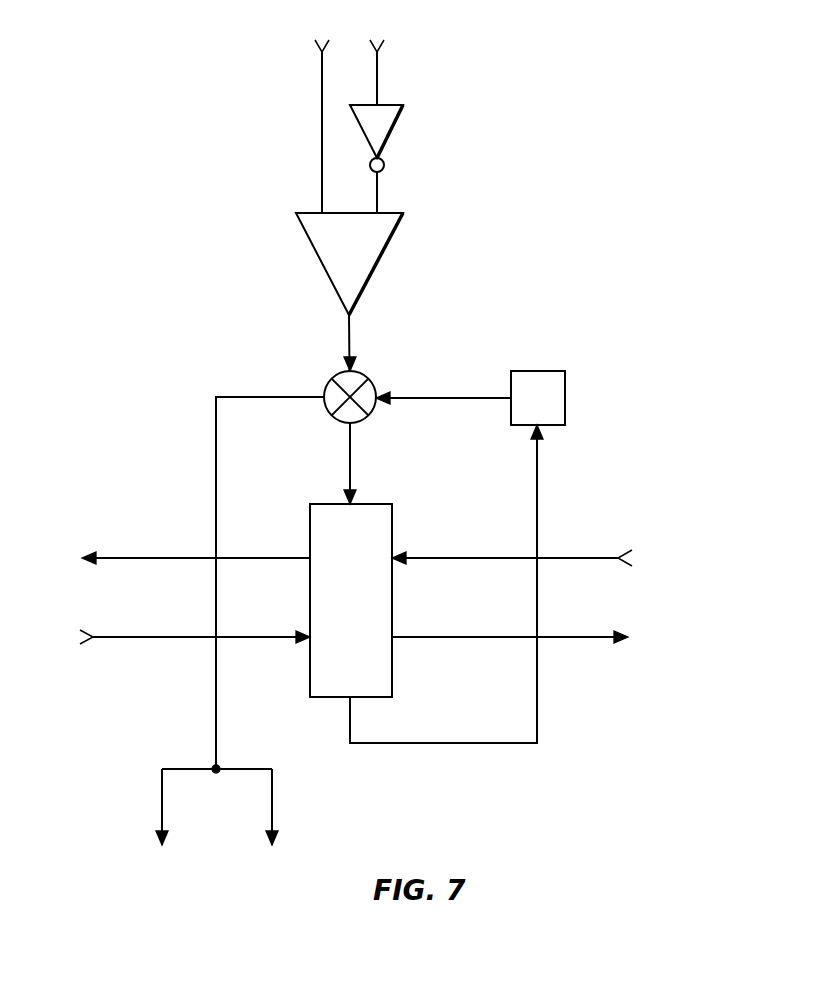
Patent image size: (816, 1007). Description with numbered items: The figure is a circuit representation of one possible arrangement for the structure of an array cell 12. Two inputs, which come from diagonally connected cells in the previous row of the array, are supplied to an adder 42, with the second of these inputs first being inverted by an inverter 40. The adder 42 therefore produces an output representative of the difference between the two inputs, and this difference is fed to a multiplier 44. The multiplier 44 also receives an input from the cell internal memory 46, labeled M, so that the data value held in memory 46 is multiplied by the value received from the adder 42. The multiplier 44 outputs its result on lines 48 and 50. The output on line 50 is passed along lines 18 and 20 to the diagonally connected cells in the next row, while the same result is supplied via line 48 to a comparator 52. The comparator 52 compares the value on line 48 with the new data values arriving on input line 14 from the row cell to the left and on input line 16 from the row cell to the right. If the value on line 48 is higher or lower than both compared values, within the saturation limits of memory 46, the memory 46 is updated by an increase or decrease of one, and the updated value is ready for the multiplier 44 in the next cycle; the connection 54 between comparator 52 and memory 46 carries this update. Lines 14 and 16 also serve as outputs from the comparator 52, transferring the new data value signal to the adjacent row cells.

The cell 12 is at (452, 294).
The input line 14 is at (174, 635).
The input line 16 is at (146, 557).
The line 18 is at (377, 87).
The line 20 is at (322, 124).
The inverter 40 is at (391, 131).
The adder 42 is at (379, 258).
The multiplier 44 is at (368, 379).
The cell internal memory 46 is at (565, 398).
The line 48 is at (449, 399).
The line 50 is at (216, 440).
The comparator 52 is at (392, 598).
The feedback line to memory 54 is at (537, 503).